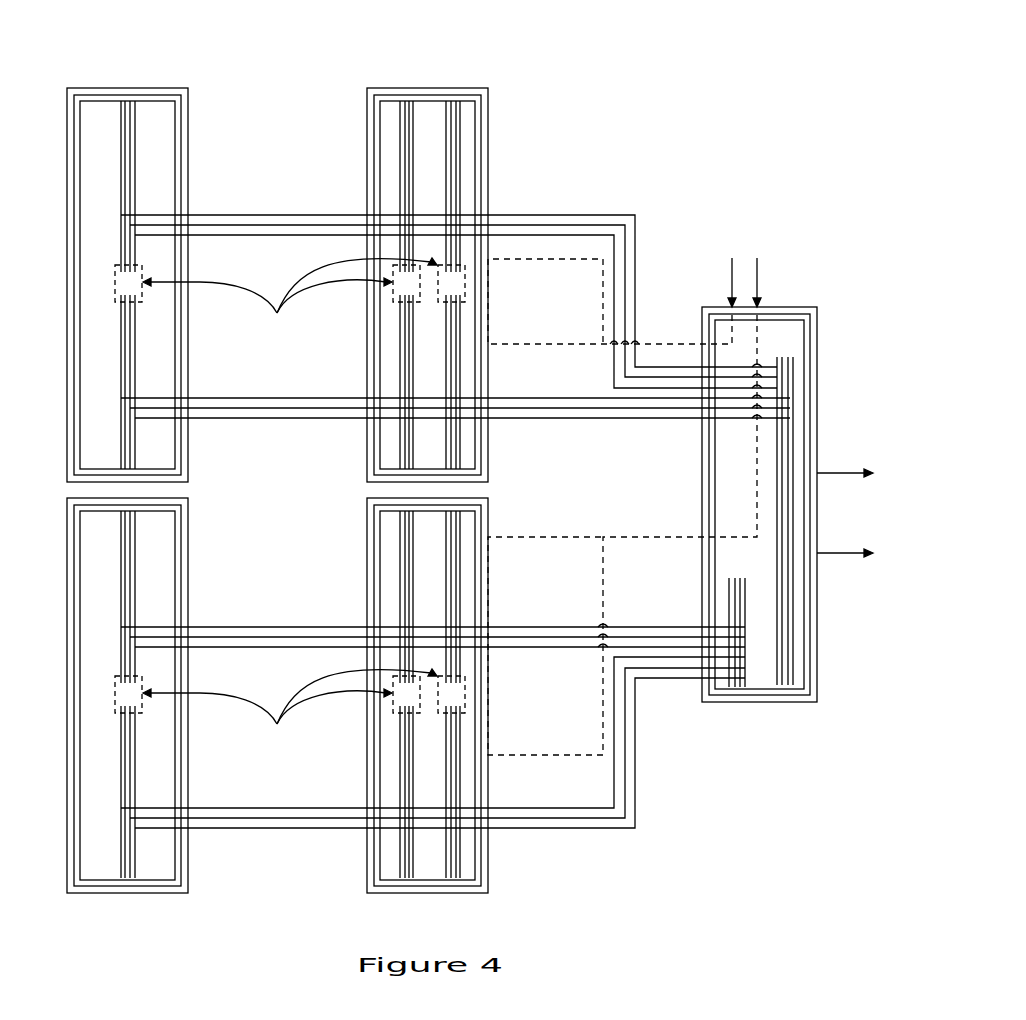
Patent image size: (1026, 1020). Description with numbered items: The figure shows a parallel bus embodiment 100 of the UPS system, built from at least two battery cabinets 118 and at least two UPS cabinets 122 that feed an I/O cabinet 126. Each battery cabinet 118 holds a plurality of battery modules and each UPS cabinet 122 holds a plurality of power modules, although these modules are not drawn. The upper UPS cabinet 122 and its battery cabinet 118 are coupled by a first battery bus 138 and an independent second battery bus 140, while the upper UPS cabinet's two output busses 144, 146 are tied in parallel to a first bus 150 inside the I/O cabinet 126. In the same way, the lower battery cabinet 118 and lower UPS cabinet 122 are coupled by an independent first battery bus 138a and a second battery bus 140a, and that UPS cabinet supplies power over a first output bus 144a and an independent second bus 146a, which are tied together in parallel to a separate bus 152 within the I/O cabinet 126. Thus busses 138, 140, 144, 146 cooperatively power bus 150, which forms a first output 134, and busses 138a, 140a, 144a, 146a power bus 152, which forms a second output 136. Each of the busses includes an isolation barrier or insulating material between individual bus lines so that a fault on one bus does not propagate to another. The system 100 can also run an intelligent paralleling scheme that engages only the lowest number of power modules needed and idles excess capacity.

The parallel bus embodiment 100 is at (303, 42).
The battery cabinet 118 is at (188, 131).
The UPS cabinet 122 is at (488, 125).
The I/O cabinet 126 is at (817, 355).
The first output 134 is at (838, 474).
The second output 136 is at (835, 552).
The first battery bus 138 is at (363, 204).
The first battery bus 138a is at (363, 616).
The second battery bus 140 is at (196, 431).
The second battery bus 140a is at (196, 841).
The output bus 144 is at (493, 204).
The first output bus 144a is at (693, 616).
The output bus 146 is at (508, 431).
The second bus 146a is at (503, 841).
The first bus 150 is at (797, 653).
The bus 152 is at (720, 692).